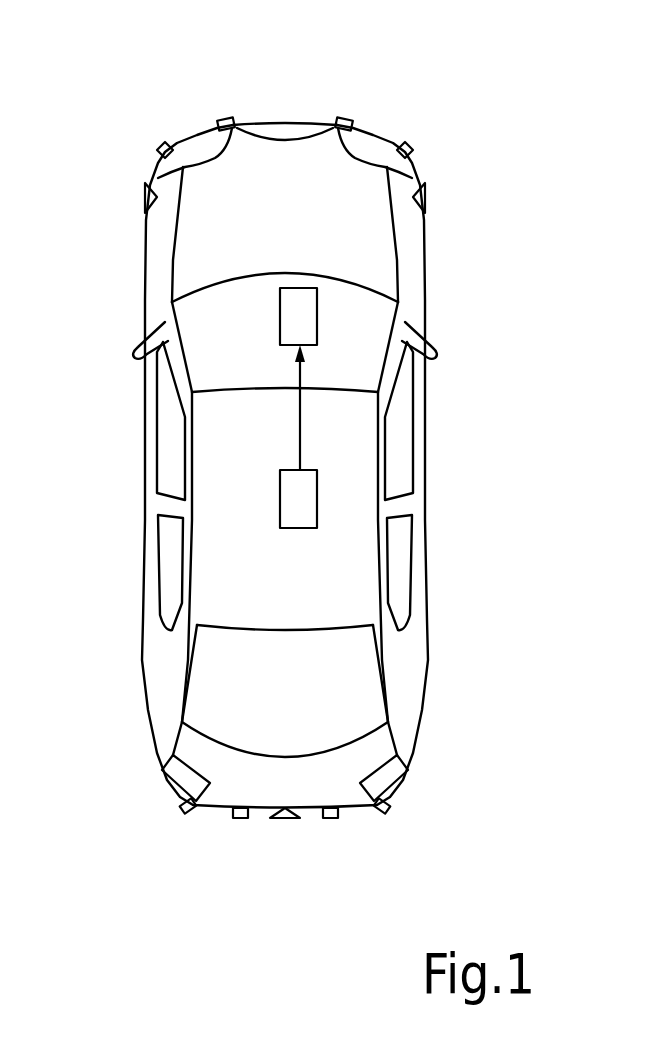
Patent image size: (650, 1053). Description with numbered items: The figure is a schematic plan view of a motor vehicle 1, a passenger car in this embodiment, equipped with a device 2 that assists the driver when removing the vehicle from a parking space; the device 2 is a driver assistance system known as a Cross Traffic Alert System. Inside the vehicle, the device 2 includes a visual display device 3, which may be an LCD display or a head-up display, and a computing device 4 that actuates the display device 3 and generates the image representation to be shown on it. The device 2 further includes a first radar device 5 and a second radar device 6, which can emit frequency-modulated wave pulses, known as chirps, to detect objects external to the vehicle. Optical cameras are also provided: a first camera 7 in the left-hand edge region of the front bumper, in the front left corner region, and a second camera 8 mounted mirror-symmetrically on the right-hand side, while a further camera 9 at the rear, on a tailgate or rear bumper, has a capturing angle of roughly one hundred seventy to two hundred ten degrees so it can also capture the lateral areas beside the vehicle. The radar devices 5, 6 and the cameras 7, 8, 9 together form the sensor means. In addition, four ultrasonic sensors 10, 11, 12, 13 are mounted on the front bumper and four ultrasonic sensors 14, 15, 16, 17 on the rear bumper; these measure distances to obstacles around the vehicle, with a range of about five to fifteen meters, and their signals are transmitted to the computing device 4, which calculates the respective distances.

The motor vehicle 1 is at (380, 230).
The device 2 is at (220, 586).
The visual display device 3 is at (283, 317).
The computing device 4 is at (285, 500).
The first radar device 5 is at (173, 778).
The second radar device 6 is at (395, 777).
The first camera 7 is at (147, 193).
The second camera 8 is at (428, 197).
The further camera 9 is at (285, 818).
The ultrasonic sensor 10 is at (163, 147).
The ultrasonic sensor 11 is at (230, 118).
The ultrasonic sensor 12 is at (347, 118).
The ultrasonic sensor 13 is at (410, 145).
The ultrasonic sensor 14 is at (188, 812).
The ultrasonic sensor 15 is at (240, 818).
The ultrasonic sensor 16 is at (332, 818).
The ultrasonic sensor 17 is at (382, 812).